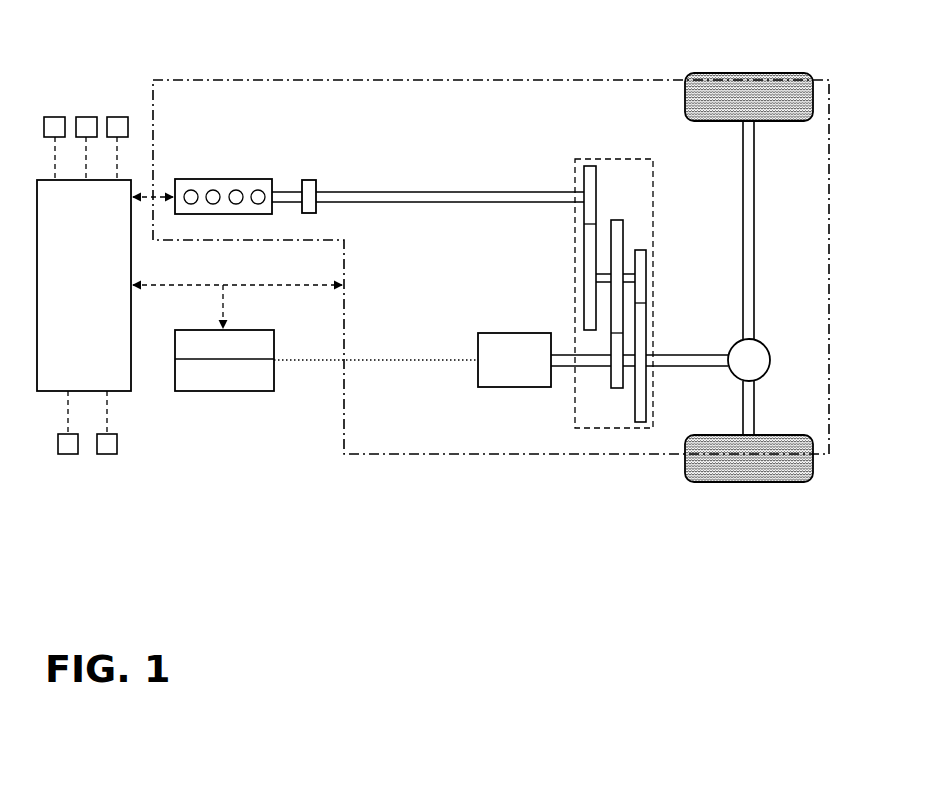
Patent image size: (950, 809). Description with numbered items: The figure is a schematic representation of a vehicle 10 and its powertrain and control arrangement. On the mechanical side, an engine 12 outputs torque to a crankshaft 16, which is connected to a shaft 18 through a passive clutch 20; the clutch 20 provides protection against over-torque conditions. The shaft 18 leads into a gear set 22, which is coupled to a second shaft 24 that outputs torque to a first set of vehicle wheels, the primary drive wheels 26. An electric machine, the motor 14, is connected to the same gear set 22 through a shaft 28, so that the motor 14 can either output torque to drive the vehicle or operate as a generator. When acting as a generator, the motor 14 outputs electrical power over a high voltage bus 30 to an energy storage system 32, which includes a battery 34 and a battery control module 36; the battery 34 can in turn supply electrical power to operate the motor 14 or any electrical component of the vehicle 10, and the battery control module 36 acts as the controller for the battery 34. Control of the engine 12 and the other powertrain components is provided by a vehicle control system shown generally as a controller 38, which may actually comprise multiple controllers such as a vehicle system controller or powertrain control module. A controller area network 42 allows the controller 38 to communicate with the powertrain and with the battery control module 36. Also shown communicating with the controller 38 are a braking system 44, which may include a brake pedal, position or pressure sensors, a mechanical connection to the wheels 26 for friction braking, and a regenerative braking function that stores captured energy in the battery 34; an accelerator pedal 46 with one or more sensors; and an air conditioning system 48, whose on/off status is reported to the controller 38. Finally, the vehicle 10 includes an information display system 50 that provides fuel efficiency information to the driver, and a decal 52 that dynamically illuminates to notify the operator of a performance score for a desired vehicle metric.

The vehicle 10 is at (299, 77).
The engine 12 is at (204, 178).
The motor 14 is at (503, 388).
The crankshaft 16 is at (287, 190).
The shaft 18 is at (414, 190).
The passive clutch 20 is at (307, 178).
The gear set 22 is at (611, 429).
The second shaft 24 is at (700, 353).
The primary drive wheels 26 is at (728, 80).
The shaft 28 is at (565, 367).
The high voltage bus 30 is at (322, 364).
The energy storage system 32 is at (173, 359).
The battery 34 is at (274, 348).
The battery control module 36 is at (274, 378).
The controller 38 is at (37, 365).
The controller area network 42 is at (140, 200).
The braking system 44 is at (55, 115).
The accelerator pedal 46 is at (88, 115).
The air conditioning system 48 is at (118, 115).
The information display system 50 is at (68, 456).
The decal 52 is at (107, 456).